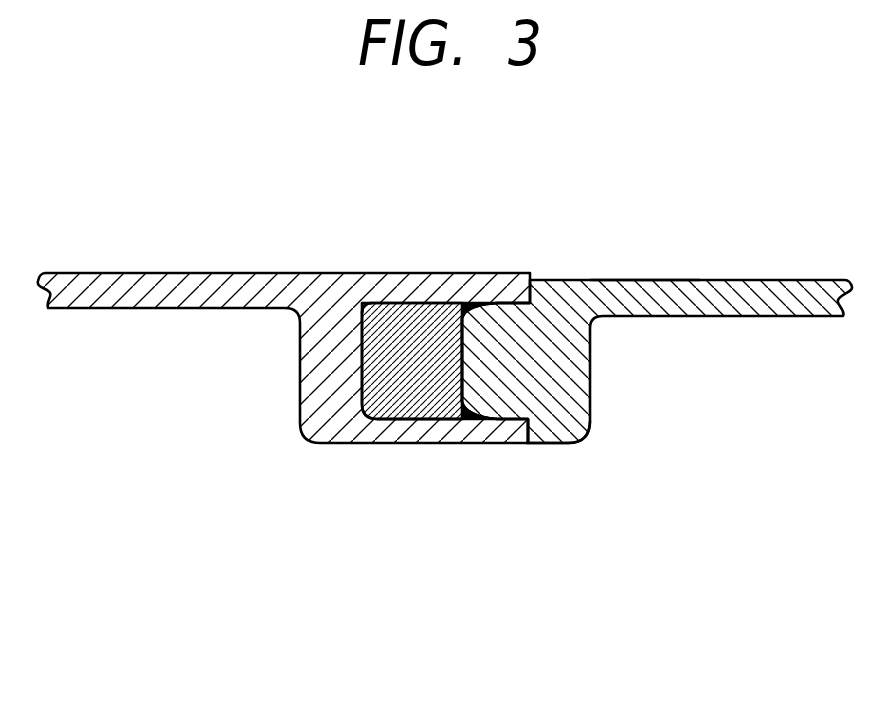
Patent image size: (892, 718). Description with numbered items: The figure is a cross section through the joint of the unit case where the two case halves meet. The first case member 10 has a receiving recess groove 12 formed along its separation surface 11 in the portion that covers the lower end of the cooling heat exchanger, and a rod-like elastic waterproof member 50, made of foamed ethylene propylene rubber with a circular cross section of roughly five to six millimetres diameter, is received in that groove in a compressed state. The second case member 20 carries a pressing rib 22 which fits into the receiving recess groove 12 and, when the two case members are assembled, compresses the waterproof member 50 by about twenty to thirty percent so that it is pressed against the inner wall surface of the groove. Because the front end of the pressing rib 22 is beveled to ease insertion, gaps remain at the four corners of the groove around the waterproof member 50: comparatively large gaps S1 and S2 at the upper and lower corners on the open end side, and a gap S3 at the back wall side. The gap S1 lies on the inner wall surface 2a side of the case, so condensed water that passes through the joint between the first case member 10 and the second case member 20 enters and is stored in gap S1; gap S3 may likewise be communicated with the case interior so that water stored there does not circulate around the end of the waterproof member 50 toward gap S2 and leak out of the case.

The first case member 10 is at (127, 273).
The second case member 20 is at (722, 280).
The inner wall surface 2a is at (610, 280).
The pressing rib 22 is at (477, 332).
The receiving recess groove 12 is at (412, 313).
The gap S1 is at (465, 303).
The gap S2 is at (472, 420).
The gap S3 is at (360, 304).
The waterproof member 50 is at (418, 419).
The separation surface 11 is at (563, 444).